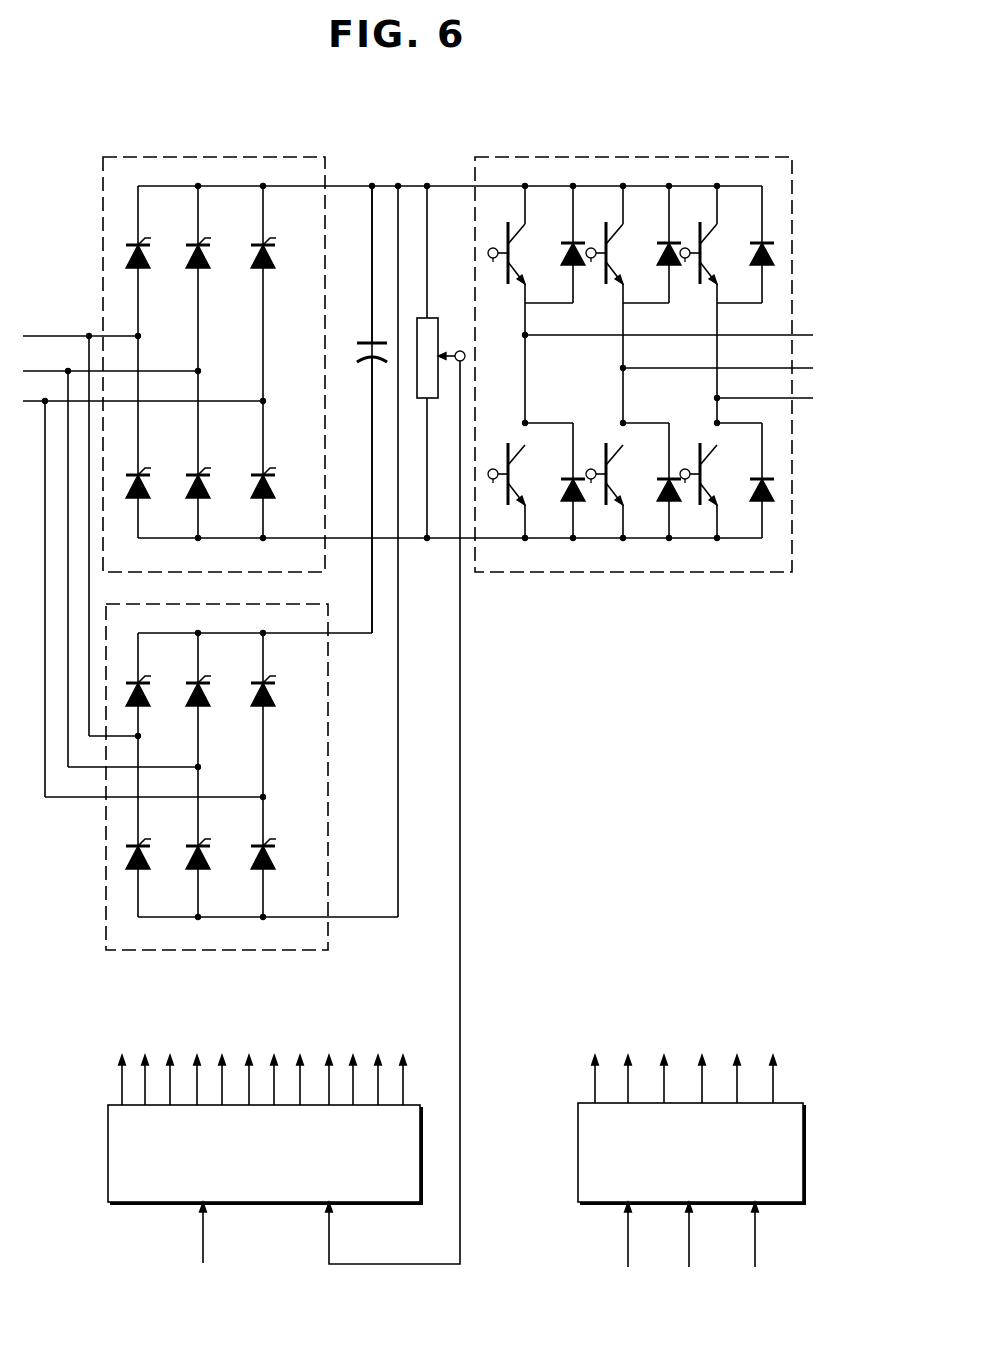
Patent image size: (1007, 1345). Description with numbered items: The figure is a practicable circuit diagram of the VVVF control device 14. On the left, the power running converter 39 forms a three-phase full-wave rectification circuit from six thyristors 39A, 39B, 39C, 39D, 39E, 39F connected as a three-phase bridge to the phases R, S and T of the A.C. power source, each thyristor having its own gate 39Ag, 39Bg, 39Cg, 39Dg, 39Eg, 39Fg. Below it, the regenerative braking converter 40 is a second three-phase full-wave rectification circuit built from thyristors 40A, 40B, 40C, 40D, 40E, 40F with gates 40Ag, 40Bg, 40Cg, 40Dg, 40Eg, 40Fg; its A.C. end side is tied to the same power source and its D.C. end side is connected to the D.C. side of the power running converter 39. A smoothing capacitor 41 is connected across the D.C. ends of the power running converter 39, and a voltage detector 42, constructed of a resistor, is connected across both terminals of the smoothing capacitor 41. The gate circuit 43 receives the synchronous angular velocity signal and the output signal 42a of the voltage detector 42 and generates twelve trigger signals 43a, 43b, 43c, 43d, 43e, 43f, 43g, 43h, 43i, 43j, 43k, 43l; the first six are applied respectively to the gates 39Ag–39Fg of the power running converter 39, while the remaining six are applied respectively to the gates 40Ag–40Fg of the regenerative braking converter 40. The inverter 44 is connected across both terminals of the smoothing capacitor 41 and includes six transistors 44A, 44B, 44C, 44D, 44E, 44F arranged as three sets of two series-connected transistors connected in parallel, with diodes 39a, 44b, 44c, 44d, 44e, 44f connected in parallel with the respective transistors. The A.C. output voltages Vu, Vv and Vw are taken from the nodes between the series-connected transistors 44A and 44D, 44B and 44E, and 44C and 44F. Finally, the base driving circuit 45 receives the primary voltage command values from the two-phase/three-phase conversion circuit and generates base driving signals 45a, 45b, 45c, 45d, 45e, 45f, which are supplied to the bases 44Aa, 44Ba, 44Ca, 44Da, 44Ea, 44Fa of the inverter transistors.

The VVVF control device 14 is at (66, 110).
The power running converter 39 is at (218, 157).
The thyristor 39A is at (145, 268).
The thyristor 39B is at (205, 268).
The thyristor 39C is at (270, 268).
The thyristor 39D is at (146, 468).
The thyristor 39E is at (206, 468).
The thyristor 39F is at (271, 468).
The gate of thyristor 39Ag is at (146, 240).
The gate of thyristor 39Bg is at (206, 240).
The gate of thyristor 39Cg is at (271, 240).
The gate of thyristor 39Dg is at (145, 497).
The gate of thyristor 39Eg is at (205, 497).
The gate of thyristor 39Fg is at (270, 497).
The diode 39a is at (560, 250).
The regenerative braking converter 40 is at (328, 665).
The thyristor 40A is at (145, 707).
The thyristor 40B is at (205, 707).
The thyristor 40C is at (270, 707).
The thyristor 40D is at (145, 868).
The thyristor 40E is at (205, 868).
The thyristor 40F is at (270, 868).
The gate of thyristor 40Ag is at (146, 678).
The gate of thyristor 40Bg is at (206, 678).
The gate of thyristor 40Cg is at (271, 678).
The gate of thyristor 40Dg is at (146, 841).
The gate of thyristor 40Eg is at (206, 841).
The gate of thyristor 40Fg is at (271, 841).
The smoothing capacitor 41 is at (357, 345).
The voltage detector 42 is at (430, 318).
The output signal of the voltage detector 42a is at (396, 1265).
The gate circuit 43 is at (108, 1153).
The trigger signal 43a is at (122, 1057).
The trigger signal 43b is at (145, 1057).
The trigger signal 43c is at (170, 1058).
The trigger signal 43d is at (197, 1057).
The trigger signal 43e is at (222, 1057).
The trigger signal 43f is at (249, 1059).
The trigger signal 43g is at (274, 1057).
The trigger signal 43h is at (300, 1057).
The trigger signal 43i is at (329, 1060).
The trigger signal 43j is at (353, 1060).
The trigger signal 43k is at (378, 1057).
The trigger signal 43l is at (403, 1059).
The inverter 44 is at (610, 157).
The transistor 44A is at (507, 236).
The transistor 44B is at (604, 236).
The transistor 44C is at (699, 236).
The transistor 44D is at (507, 458).
The transistor 44E is at (604, 458).
The transistor 44F is at (699, 458).
The base of transistor 44Aa is at (493, 258).
The base of transistor 44Ba is at (591, 258).
The base of transistor 44Ca is at (685, 258).
The base of transistor 44Da is at (493, 479).
The base of transistor 44Ea is at (591, 479).
The base of transistor 44Fa is at (685, 479).
The diode 44b is at (657, 250).
The diode 44c is at (750, 252).
The diode 44d is at (561, 496).
The diode 44e is at (657, 496).
The diode 44f is at (772, 490).
The base driving circuit 45 is at (578, 1156).
The base driving signal 45a is at (595, 1056).
The base driving signal 45b is at (628, 1056).
The base driving signal 45c is at (664, 1057).
The base driving signal 45d is at (702, 1056).
The base driving signal 45e is at (737, 1056).
The base driving signal 45f is at (773, 1058).